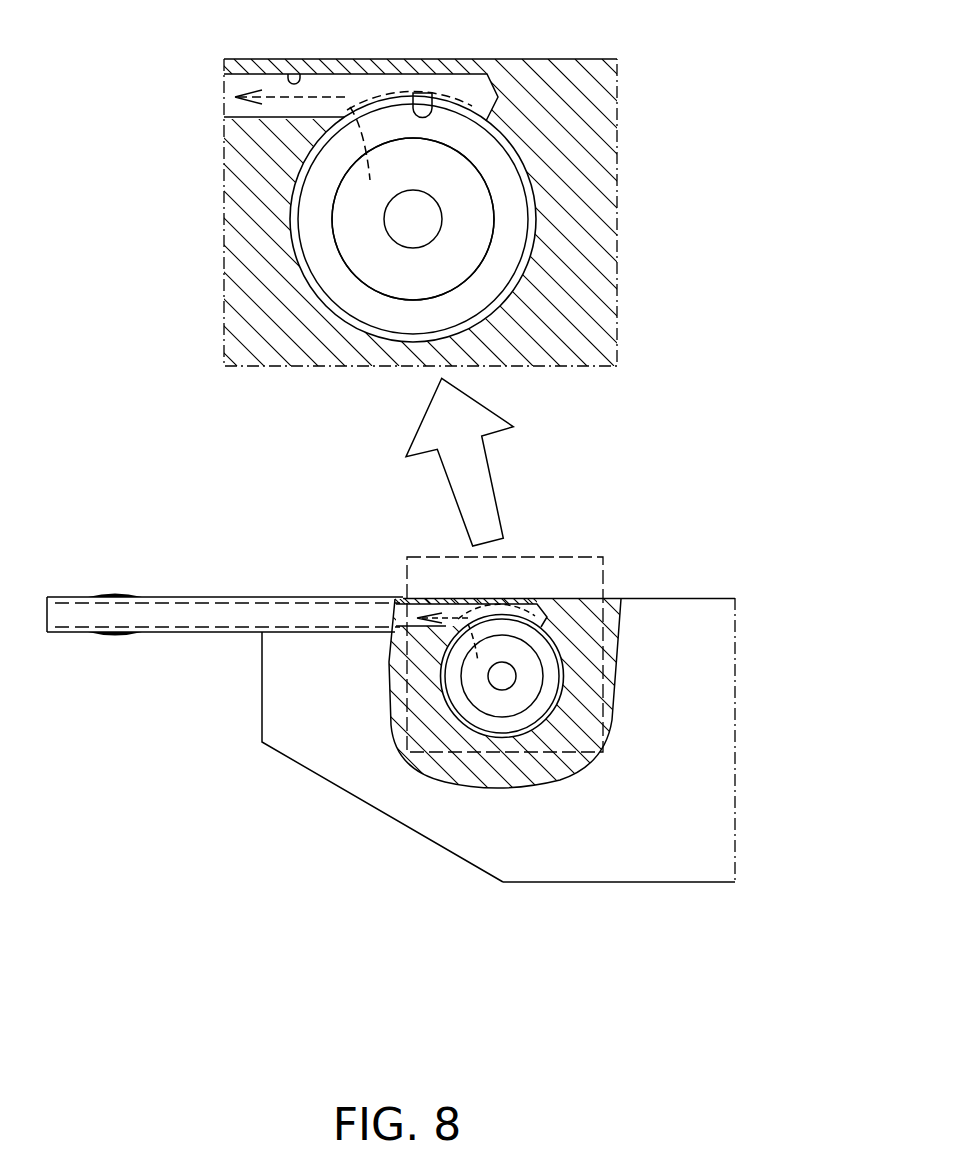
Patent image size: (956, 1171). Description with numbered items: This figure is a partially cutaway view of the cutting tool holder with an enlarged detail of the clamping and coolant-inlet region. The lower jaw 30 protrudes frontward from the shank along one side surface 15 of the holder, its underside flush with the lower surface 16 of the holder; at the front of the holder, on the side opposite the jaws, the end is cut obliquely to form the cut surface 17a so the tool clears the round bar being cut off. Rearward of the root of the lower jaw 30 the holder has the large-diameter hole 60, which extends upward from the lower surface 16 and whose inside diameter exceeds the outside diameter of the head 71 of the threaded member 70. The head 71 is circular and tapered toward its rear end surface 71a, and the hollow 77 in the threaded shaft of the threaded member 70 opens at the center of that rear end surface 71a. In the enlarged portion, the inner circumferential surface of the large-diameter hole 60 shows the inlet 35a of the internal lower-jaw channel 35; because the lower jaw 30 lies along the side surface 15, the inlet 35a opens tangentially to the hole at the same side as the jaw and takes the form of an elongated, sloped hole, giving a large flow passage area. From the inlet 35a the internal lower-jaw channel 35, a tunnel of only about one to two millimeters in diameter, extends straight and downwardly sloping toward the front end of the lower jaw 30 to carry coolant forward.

The side surface 15 is at (672, 599).
The lower surface 16 is at (712, 780).
The cut surface 17a is at (357, 798).
The lower jaw 30 is at (184, 633).
The internal lower-jaw channel 35 is at (298, 76).
The inlet 35a is at (430, 100).
The large-diameter hole 60 is at (322, 297).
The threaded member 70 is at (445, 692).
The head 71 is at (512, 203).
The rear end surface 71a is at (468, 246).
The hollow 77 is at (397, 218).